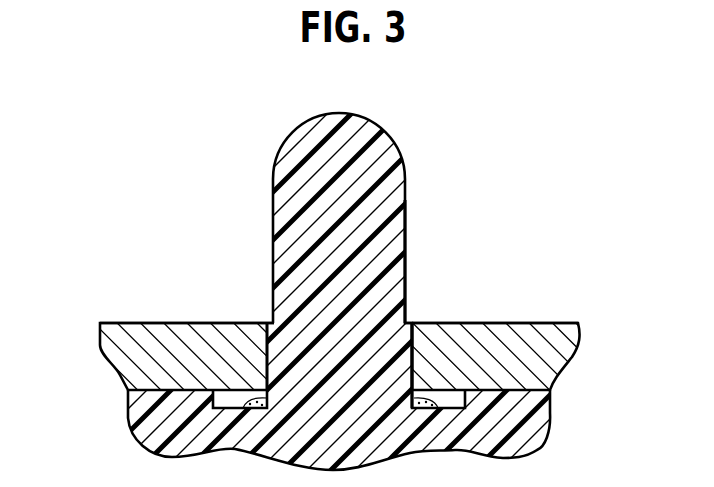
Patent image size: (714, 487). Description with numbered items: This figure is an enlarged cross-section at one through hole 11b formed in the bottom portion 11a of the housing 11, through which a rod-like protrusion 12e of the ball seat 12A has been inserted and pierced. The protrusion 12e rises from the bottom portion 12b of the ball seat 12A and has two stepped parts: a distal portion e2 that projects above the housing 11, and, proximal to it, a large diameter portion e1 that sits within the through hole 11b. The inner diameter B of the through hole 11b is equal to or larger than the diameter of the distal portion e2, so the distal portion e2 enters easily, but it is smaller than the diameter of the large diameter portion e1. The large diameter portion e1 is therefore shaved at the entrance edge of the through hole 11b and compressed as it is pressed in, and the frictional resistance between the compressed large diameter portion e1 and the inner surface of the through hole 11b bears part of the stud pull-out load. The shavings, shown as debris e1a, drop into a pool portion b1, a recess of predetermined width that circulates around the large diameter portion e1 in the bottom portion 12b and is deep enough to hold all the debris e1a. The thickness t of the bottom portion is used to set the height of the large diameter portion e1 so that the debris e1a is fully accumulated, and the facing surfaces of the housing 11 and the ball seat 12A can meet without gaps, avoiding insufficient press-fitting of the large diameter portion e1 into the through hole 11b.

The housing 11 is at (547, 323).
The bottom portion of the housing 11a is at (488, 343).
The through hole 11b is at (295, 330).
The ball seat 12A is at (245, 190).
The bottom portion of the ball seat 12b is at (133, 413).
The protrusion 12e is at (507, 163).
The large diameter portion e1 is at (406, 364).
The distal portion e2 is at (393, 228).
The debris e1a is at (240, 404).
The pool portion b1 is at (184, 350).
The inner diameter of the through hole B is at (412, 317).
The thickness of the bottom portion t is at (580, 323).